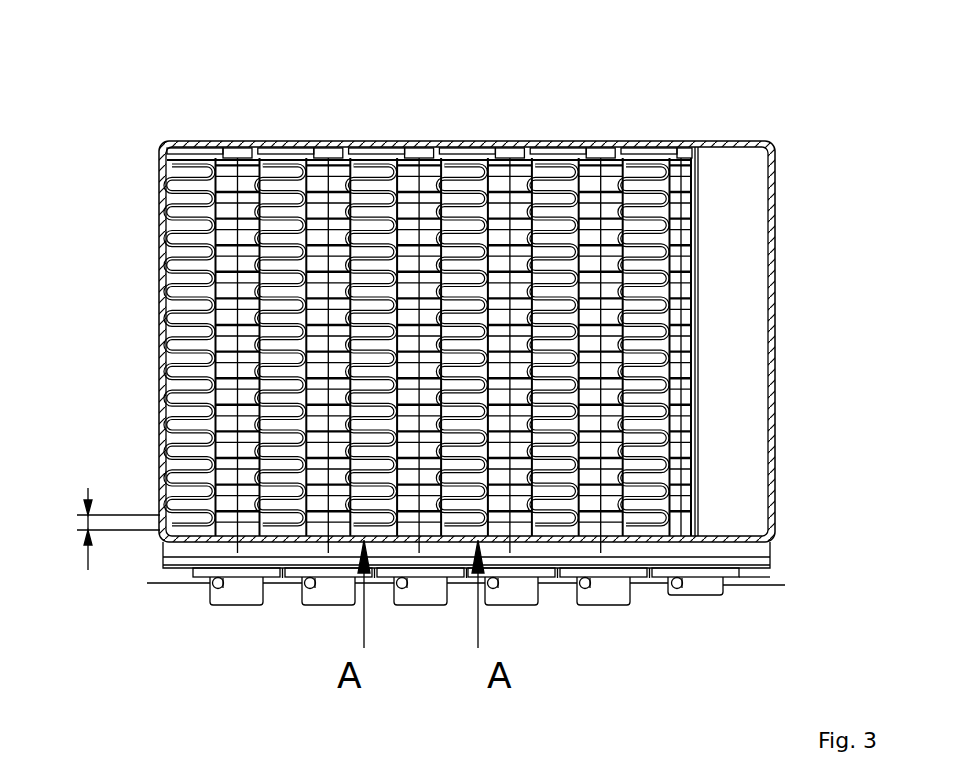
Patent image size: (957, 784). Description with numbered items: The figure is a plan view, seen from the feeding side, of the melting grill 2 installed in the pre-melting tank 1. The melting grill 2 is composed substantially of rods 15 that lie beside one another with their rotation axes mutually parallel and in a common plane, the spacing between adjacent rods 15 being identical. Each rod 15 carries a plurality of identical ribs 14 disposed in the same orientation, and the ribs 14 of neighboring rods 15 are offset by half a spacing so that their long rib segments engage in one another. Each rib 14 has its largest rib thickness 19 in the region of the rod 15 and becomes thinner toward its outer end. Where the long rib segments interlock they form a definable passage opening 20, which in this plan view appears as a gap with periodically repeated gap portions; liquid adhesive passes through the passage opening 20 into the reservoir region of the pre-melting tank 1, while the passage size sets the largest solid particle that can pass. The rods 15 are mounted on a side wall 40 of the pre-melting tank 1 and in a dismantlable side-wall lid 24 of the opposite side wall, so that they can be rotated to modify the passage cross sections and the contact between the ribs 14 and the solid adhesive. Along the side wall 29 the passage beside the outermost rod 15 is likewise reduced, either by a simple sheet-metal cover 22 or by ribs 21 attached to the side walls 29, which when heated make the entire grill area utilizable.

The pre-melting tank 1 is at (800, 294).
The melting grill 2 is at (548, 118).
The rib 14 is at (210, 200).
The rod 15 is at (322, 147).
The rib thickness 19 is at (88, 524).
The passage opening 20 is at (382, 193).
The ribs attached to the side walls 21 is at (188, 250).
The sheet-metal cover 22 is at (735, 183).
The side-wall lid 24 is at (760, 562).
The side wall 29 is at (775, 432).
The side wall 40 is at (355, 150).